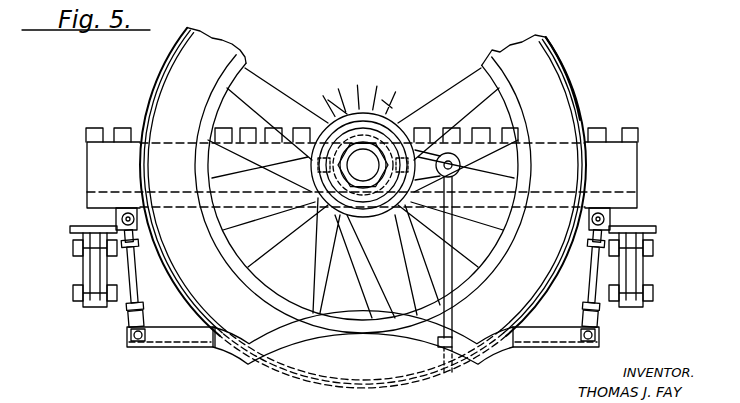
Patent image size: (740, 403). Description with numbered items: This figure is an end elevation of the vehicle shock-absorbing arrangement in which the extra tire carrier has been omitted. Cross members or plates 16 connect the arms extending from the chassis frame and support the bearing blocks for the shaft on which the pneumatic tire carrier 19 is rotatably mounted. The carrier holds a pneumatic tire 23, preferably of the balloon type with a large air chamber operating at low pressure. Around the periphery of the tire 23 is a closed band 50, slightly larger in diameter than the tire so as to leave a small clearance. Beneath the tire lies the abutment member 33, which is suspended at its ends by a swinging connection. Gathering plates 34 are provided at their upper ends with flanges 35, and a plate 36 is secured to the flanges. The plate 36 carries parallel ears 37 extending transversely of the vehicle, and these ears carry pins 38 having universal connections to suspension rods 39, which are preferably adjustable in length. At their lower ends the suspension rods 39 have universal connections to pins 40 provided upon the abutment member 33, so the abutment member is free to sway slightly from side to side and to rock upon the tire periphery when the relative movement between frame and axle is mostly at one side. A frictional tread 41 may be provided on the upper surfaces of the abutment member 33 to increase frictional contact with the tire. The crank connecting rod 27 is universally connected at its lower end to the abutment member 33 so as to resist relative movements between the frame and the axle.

The cross members or plates 16 is at (640, 200).
The pneumatic tire carrier 19 is at (308, 208).
The pneumatic tire 23 is at (560, 106).
The crank connecting rod 27 is at (456, 282).
The abutment member 33 is at (247, 366).
The gathering plates 34 is at (75, 262).
The flanges 35 is at (116, 226).
The plate 36 is at (88, 228).
The parallel ears 37 is at (133, 228).
The pins 38 is at (137, 218).
The suspension rods 39 is at (137, 278).
The pins 40 is at (127, 341).
The frictional tread 41 is at (207, 360).
The closed band 50 is at (568, 62).